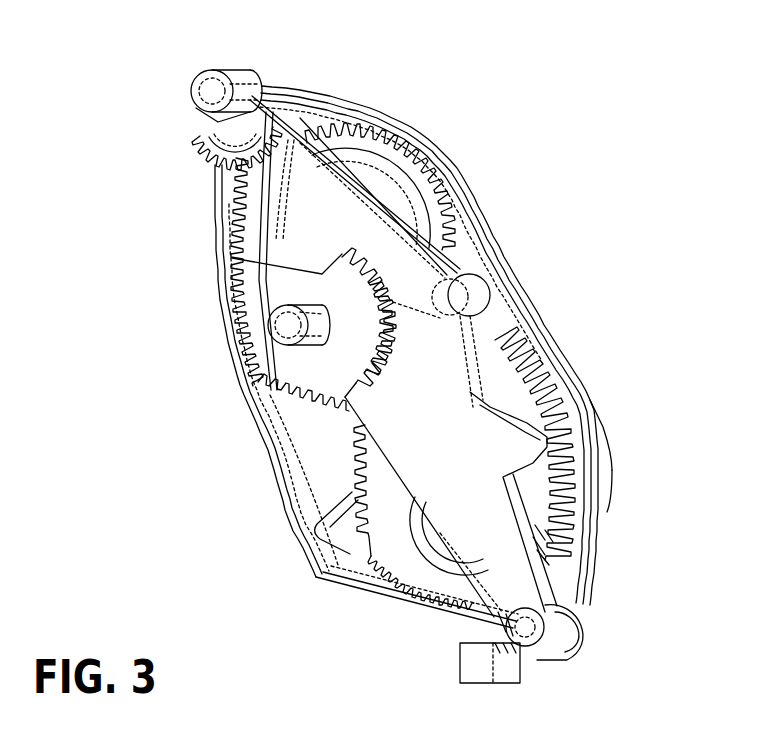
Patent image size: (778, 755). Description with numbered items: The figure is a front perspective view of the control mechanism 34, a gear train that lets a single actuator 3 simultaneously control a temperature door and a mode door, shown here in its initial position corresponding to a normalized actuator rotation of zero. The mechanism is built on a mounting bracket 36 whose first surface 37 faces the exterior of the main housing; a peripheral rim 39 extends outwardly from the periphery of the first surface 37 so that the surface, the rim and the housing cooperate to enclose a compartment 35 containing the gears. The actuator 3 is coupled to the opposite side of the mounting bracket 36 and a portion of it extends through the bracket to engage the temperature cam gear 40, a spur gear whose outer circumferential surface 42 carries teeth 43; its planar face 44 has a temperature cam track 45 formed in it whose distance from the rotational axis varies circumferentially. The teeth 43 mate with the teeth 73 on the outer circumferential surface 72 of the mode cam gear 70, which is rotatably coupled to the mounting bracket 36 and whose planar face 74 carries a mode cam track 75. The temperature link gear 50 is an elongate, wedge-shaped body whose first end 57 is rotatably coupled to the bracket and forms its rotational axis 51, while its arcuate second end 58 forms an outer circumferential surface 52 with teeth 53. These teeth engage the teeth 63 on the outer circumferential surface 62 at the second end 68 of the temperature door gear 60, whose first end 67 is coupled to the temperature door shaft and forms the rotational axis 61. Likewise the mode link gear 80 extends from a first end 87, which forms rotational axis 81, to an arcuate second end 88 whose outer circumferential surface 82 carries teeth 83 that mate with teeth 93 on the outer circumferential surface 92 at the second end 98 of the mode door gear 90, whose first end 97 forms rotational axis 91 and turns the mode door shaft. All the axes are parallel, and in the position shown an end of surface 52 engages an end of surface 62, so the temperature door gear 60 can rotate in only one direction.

The actuator 3 is at (443, 640).
The control mechanism 34 is at (178, 50).
The compartment 35 is at (318, 435).
The mounting bracket 36 is at (604, 397).
The first surface 37 is at (300, 507).
The peripheral rim 39 is at (290, 479).
The temperature cam gear 40 is at (570, 366).
The outer circumferential surface 42 is at (610, 433).
The teeth 43 is at (610, 507).
The planar face 44 is at (368, 545).
The temperature cam track 45 is at (398, 535).
The temperature link gear 50 is at (505, 538).
The rotational axis 51 is at (525, 647).
The outer circumferential surface 52 is at (466, 276).
The teeth 53 is at (393, 345).
The first end 57 is at (565, 636).
The second end 58 is at (498, 333).
The temperature door gear 60 is at (350, 352).
The rotational axis 61 is at (276, 318).
The outer circumferential surface 62 is at (370, 370).
The teeth 63 is at (393, 348).
The first end 67 is at (255, 319).
The second end 68 is at (277, 403).
The mode cam gear 70 is at (216, 285).
The outer circumferential surface 72 is at (339, 205).
The teeth 73 is at (330, 125).
The planar face 74 is at (270, 322).
The mode cam track 75 is at (394, 128).
The mode link gear 80 is at (365, 118).
The rotational axis 81 is at (492, 268).
The outer circumferential surface 82 is at (232, 257).
The teeth 83 is at (222, 224).
The first end 87 is at (480, 297).
The second end 88 is at (292, 135).
The mode door gear 90 is at (213, 123).
The rotational axis 91 is at (210, 90).
The outer circumferential surface 92 is at (206, 162).
The teeth 93 is at (198, 142).
The first end 97 is at (229, 68).
The second end 98 is at (195, 142).